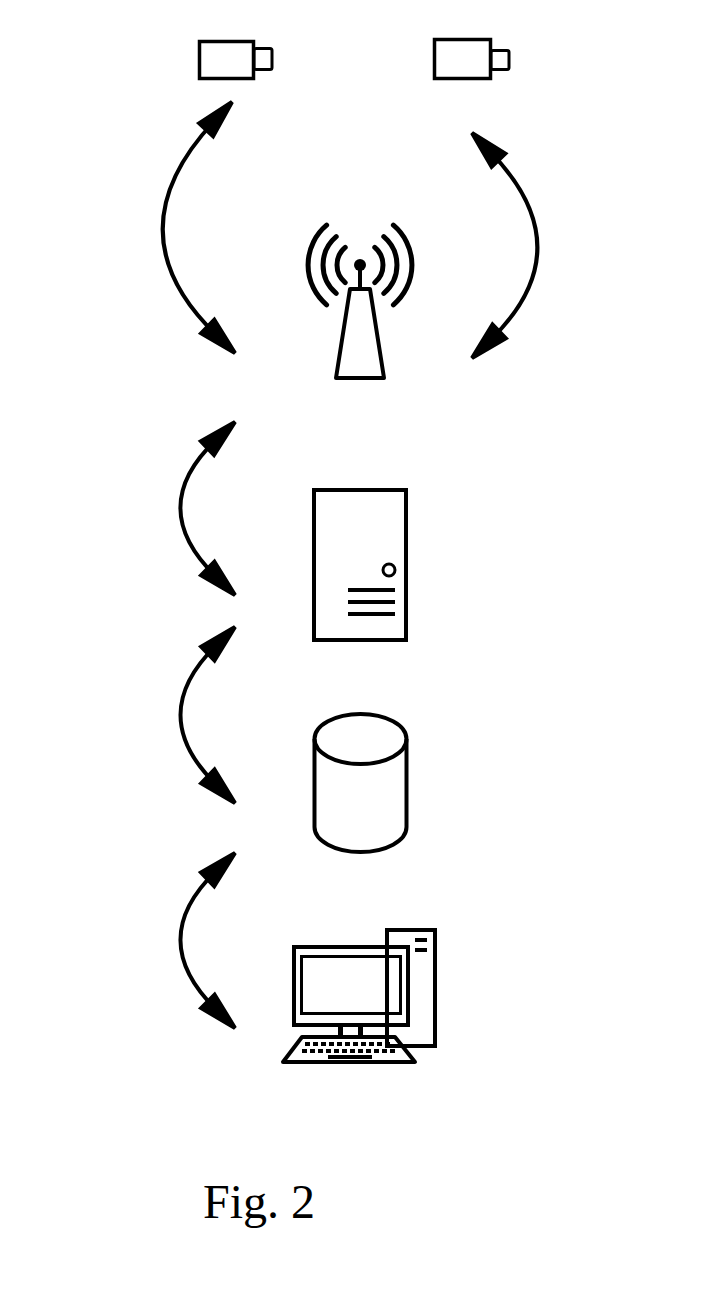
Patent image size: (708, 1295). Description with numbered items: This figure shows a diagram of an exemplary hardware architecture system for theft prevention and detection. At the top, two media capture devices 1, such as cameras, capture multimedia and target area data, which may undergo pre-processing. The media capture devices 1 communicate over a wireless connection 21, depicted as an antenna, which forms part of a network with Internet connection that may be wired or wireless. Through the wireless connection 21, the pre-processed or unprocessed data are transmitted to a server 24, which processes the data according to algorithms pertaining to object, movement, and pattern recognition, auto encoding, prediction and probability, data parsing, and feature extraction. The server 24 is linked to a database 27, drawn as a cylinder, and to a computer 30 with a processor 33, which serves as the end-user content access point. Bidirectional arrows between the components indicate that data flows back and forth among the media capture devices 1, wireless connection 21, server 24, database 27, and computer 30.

The media capture device 1 is at (215, 58).
The wireless connection 21 is at (355, 338).
The server 24 is at (401, 533).
The database 27 is at (397, 795).
The computer 30 is at (337, 977).
The processor 33 is at (435, 1045).